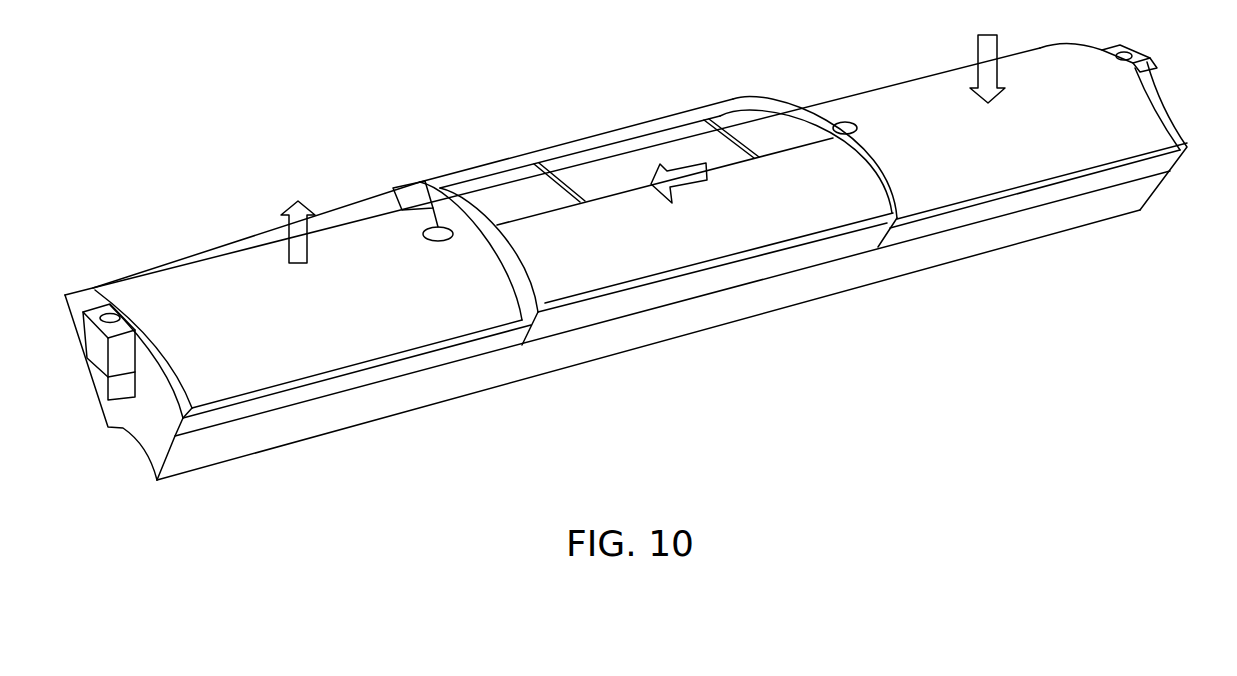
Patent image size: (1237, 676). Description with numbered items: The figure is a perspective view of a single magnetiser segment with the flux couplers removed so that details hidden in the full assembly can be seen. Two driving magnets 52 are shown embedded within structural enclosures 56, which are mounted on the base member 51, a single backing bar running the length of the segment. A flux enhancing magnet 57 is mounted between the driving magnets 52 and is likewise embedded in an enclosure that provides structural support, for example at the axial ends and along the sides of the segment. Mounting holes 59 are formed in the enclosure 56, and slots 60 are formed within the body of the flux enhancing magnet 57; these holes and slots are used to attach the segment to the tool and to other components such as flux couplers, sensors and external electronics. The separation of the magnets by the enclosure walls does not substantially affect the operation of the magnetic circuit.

The base member 51 is at (1147, 193).
The driving magnets 52 is at (210, 275).
The structural enclosure 56 is at (1012, 210).
The flux enhancing magnet 57 is at (627, 140).
The mounting holes 59 is at (104, 302).
The slots 60 is at (538, 163).